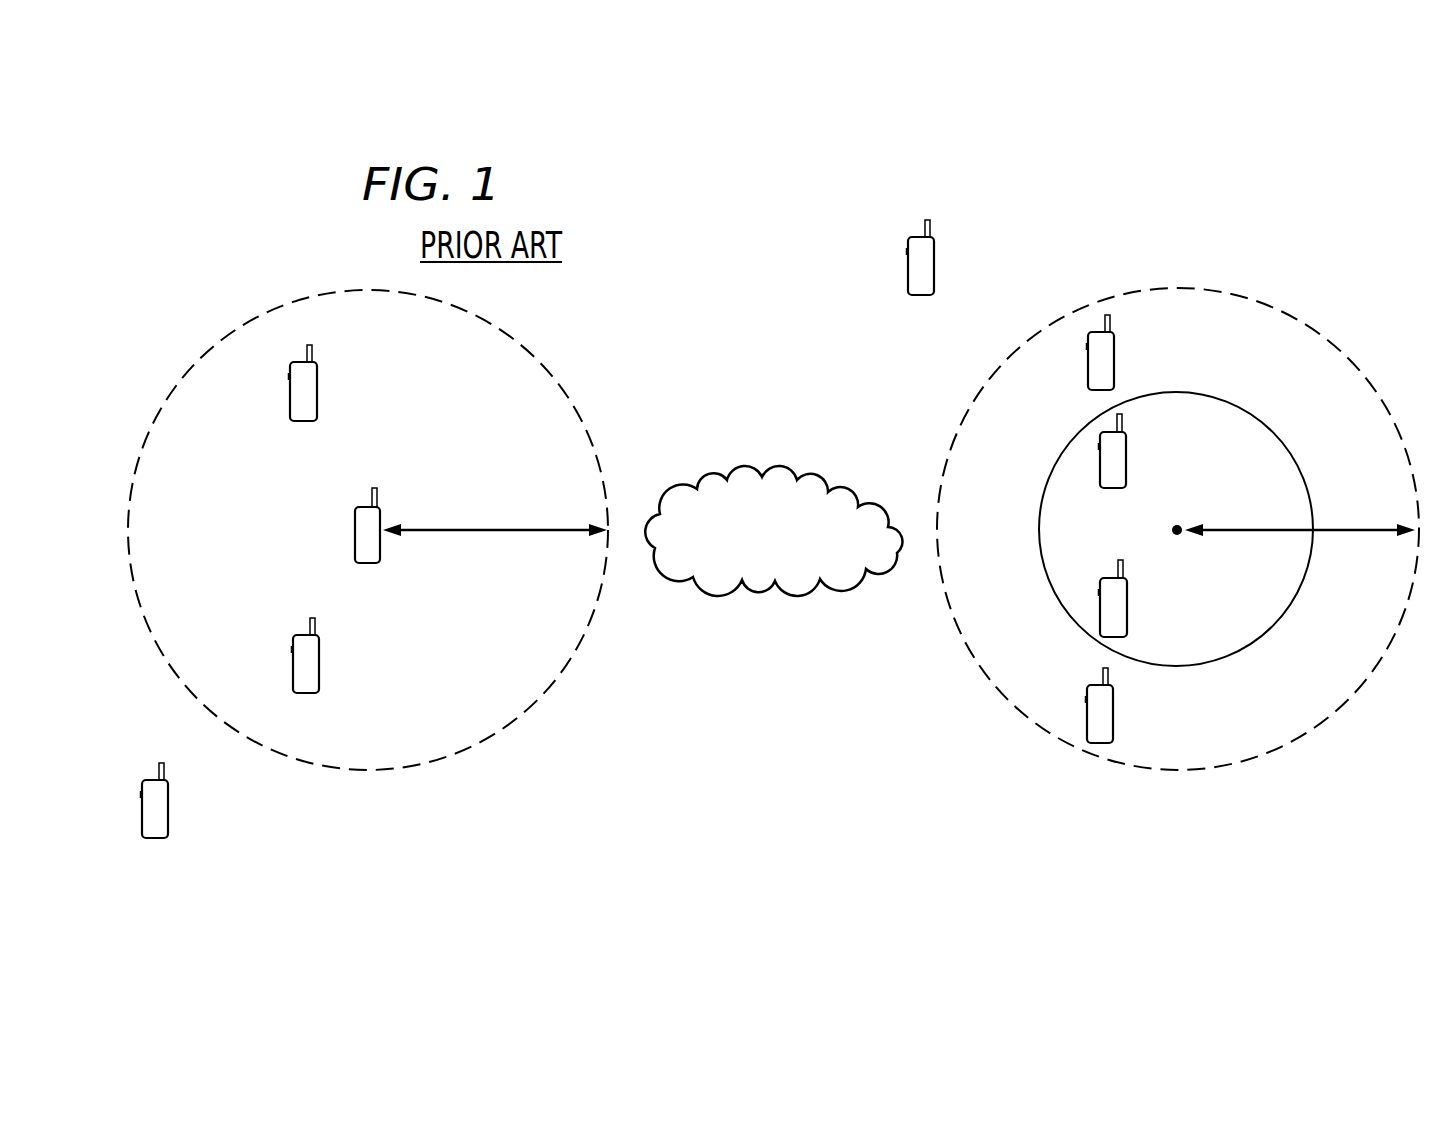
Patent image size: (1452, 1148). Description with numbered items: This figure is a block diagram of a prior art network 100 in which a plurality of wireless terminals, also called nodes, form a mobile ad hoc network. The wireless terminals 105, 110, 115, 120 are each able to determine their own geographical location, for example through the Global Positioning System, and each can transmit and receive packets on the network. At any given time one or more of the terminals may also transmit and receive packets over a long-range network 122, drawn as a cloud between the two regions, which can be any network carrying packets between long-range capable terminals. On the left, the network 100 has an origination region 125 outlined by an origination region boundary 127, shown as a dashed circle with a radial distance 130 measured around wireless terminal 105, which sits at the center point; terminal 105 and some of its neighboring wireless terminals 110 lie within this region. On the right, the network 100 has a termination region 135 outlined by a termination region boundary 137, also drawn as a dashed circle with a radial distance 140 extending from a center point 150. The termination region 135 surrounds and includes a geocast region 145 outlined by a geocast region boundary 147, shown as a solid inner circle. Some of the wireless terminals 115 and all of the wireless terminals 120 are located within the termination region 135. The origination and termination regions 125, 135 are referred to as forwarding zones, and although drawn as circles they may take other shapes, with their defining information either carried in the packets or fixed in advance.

The network 100 is at (697, 273).
The wireless terminal 105 is at (355, 523).
The wireless terminals 110 is at (318, 381).
The wireless terminals 115 is at (934, 265).
The wireless terminals 120 is at (1126, 448).
The long-range network 122 is at (765, 589).
The origination region 125 is at (550, 400).
The origination region boundary 127 is at (378, 565).
The radial distance 130 is at (487, 530).
The termination region 135 is at (1360, 400).
The termination region boundary 137 is at (1187, 557).
The radial distance 140 is at (1341, 530).
The geocast region 145 is at (1230, 420).
The geocast region boundary 147 is at (1188, 525).
The center point 150 is at (1172, 530).